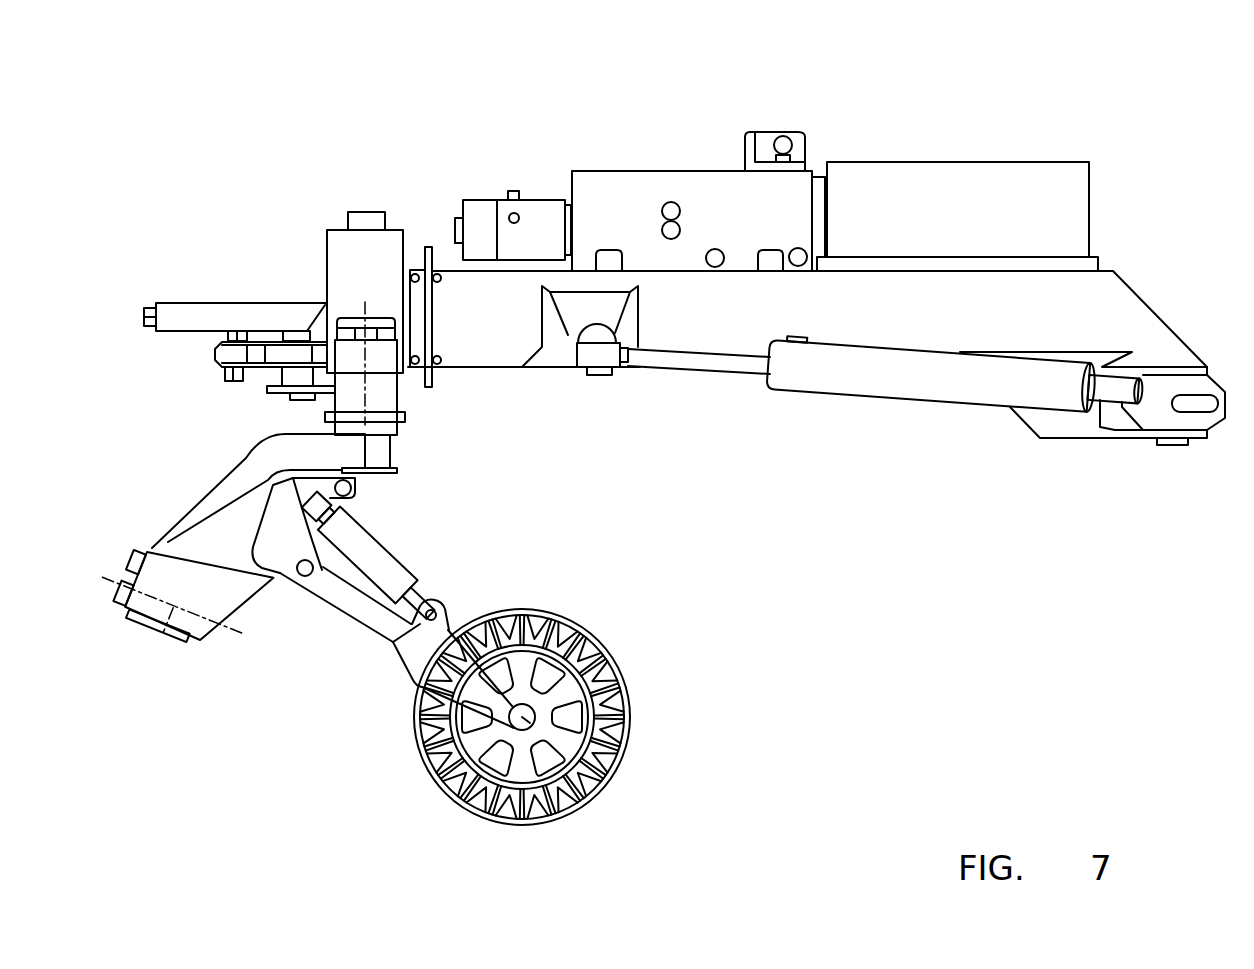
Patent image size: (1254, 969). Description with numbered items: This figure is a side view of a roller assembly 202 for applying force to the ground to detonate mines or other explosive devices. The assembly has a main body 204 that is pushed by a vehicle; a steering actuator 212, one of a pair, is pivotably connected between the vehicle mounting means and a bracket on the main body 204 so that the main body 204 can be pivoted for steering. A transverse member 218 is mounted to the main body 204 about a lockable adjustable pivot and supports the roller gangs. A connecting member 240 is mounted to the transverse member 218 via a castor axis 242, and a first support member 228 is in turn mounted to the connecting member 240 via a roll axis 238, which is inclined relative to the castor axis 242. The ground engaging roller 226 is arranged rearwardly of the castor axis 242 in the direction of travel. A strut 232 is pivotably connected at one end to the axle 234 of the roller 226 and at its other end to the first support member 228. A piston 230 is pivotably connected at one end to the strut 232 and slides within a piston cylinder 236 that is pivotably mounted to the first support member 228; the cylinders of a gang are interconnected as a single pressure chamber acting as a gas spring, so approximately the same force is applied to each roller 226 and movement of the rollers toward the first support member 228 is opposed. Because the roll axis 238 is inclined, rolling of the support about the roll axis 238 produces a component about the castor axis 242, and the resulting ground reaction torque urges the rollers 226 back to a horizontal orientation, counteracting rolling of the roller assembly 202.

The roller assembly 202 is at (885, 88).
The main body 204 is at (993, 302).
The actuator 212 is at (942, 381).
The transverse member 218 is at (382, 380).
The castor axis 242 is at (363, 400).
The connecting member 240 is at (253, 468).
The roll axis 238 is at (170, 622).
The first support member 228 is at (282, 537).
The strut 232 is at (360, 612).
The piston cylinder 236 is at (377, 555).
The piston 230 is at (418, 600).
The ground engaging roller 226 is at (632, 693).
The axle 234 is at (603, 764).